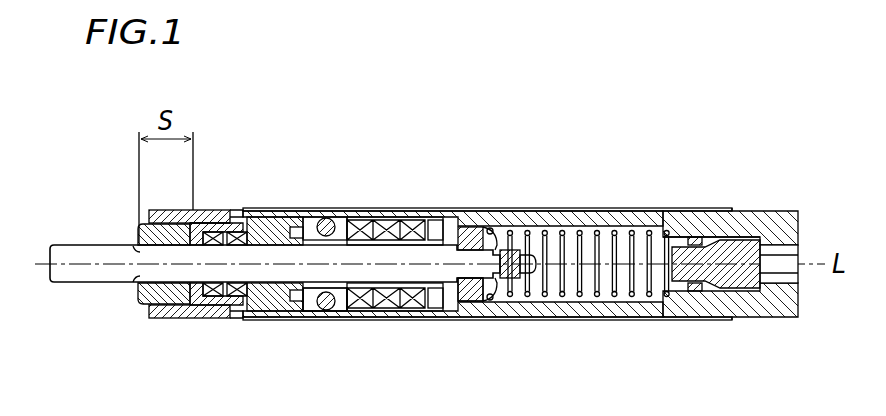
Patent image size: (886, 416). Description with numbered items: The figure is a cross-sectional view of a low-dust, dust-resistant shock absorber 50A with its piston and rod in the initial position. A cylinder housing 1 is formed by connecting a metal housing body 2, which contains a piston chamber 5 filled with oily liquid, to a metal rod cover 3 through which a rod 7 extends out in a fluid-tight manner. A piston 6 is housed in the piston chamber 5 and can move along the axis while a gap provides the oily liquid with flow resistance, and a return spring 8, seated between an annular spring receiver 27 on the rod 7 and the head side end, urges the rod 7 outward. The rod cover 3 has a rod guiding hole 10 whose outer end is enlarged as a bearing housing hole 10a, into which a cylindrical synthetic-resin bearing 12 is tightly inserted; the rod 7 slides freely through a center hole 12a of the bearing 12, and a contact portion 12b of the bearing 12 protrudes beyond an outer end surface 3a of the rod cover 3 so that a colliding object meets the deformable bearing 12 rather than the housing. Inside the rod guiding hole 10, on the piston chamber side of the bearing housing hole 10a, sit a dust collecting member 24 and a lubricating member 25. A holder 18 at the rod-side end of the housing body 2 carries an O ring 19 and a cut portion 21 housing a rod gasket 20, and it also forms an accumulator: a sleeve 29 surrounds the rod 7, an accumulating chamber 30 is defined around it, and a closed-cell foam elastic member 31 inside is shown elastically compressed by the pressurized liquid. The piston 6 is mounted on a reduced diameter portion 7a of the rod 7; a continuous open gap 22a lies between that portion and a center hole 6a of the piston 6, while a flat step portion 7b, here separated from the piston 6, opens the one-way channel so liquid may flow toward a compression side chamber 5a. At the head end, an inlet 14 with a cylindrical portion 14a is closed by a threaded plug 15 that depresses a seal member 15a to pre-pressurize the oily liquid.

The cylinder housing 1 is at (662, 173).
The housing body 2 is at (563, 222).
The rod cover 3 is at (228, 214).
The outer end surface 3a is at (150, 320).
The piston chamber 5 is at (626, 238).
The compression side chamber 5a is at (575, 300).
The piston 6 is at (470, 236).
The center hole 6a is at (470, 302).
The rod 7 is at (62, 243).
The reduced diameter portion 7a is at (488, 302).
The step portion 7b is at (481, 228).
The return spring 8 is at (620, 312).
The rod guiding hole 10 is at (197, 315).
The bearing housing hole 10a is at (200, 222).
The bearing 12 is at (176, 305).
The center hole 12a is at (133, 250).
The contact portion 12b is at (145, 290).
The inlet 14 is at (750, 305).
The cylindrical portion 14a is at (718, 232).
The plug 15 is at (762, 240).
The seal member 15a is at (692, 292).
The holder 18 is at (326, 218).
The O ring 19 is at (355, 222).
The rod gasket 20 is at (275, 222).
The cut portion 21 is at (296, 228).
The continuous open gap 22a is at (489, 227).
The dust collecting member 24 is at (216, 297).
The lubricating member 25 is at (245, 297).
The spring receiver 27 is at (508, 285).
The sleeve 29 is at (350, 312).
The accumulating chamber 30 is at (395, 315).
The elastic member 31 is at (392, 222).
The shock absorber 50A is at (621, 67).